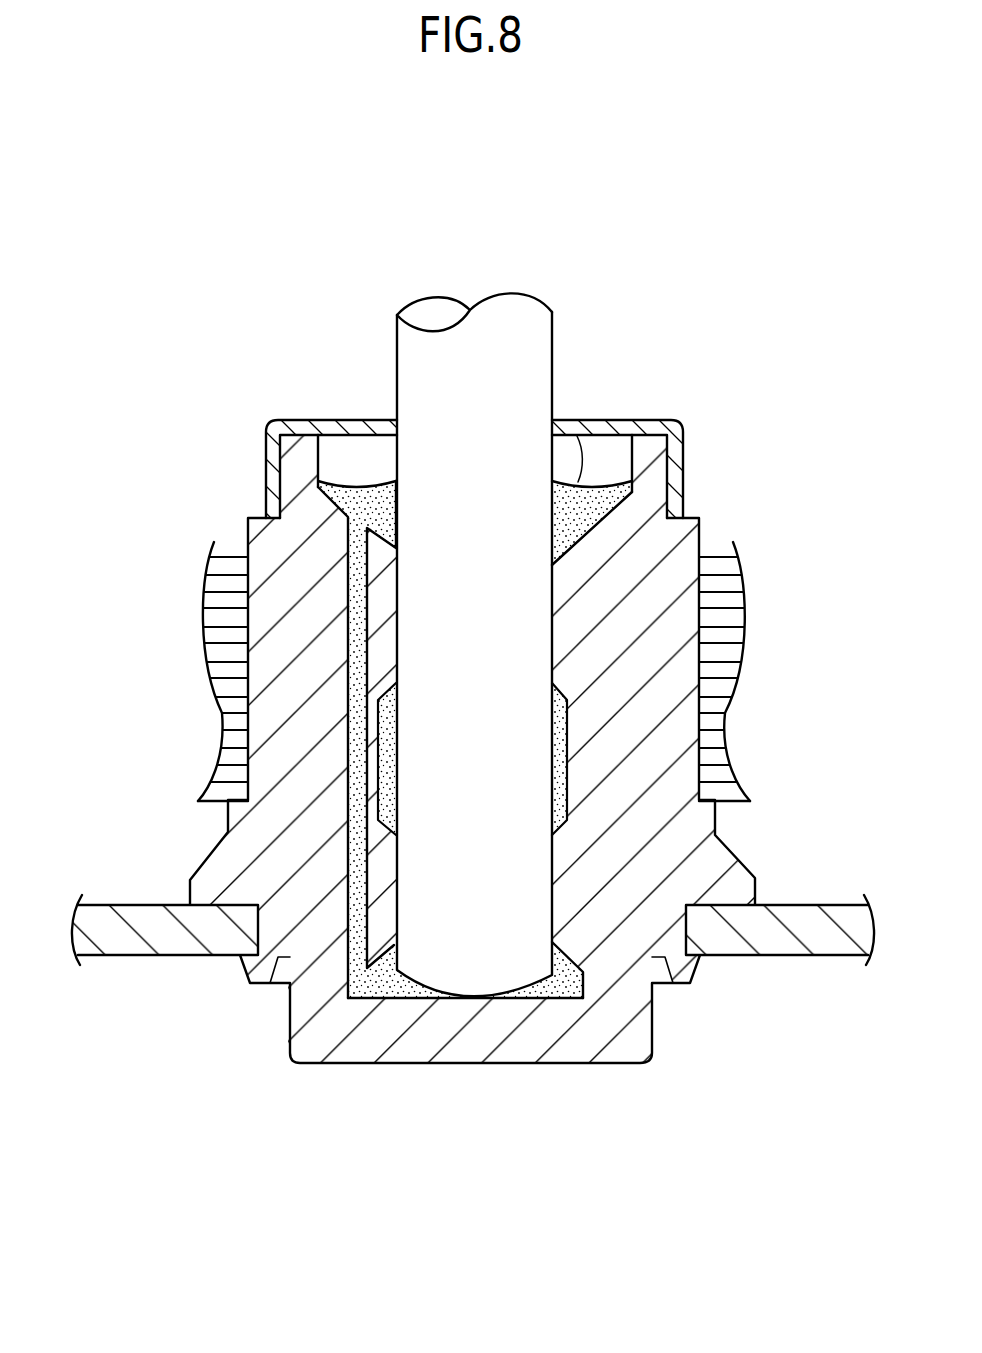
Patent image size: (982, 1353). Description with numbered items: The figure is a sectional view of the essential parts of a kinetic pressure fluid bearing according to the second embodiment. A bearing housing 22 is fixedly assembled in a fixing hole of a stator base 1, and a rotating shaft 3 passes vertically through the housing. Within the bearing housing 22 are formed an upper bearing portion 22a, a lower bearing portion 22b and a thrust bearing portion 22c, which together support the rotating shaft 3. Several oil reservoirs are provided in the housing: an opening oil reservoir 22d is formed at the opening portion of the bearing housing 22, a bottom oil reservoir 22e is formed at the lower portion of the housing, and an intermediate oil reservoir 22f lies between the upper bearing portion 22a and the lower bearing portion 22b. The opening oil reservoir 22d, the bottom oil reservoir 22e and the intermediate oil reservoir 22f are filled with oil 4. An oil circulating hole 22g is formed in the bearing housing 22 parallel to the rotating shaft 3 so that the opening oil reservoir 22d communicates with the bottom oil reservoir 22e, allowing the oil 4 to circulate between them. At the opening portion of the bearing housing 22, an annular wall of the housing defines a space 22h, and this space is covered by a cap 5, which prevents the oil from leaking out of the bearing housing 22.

The stator base 1 is at (795, 945).
The rotating shaft 3 is at (413, 377).
The oil 4 is at (575, 485).
The cap 5 is at (685, 435).
The bearing housing 22 is at (271, 1009).
The upper bearing portion 22a is at (700, 546).
The lower bearing portion 22b is at (552, 893).
The thrust bearing portion 22c is at (467, 1000).
The opening oil reservoir 22d is at (600, 493).
The bottom oil reservoir 22e is at (568, 988).
The intermediate oil reservoir 22f is at (580, 764).
The oil circulating hole 22g is at (348, 570).
The space 22h is at (350, 455).